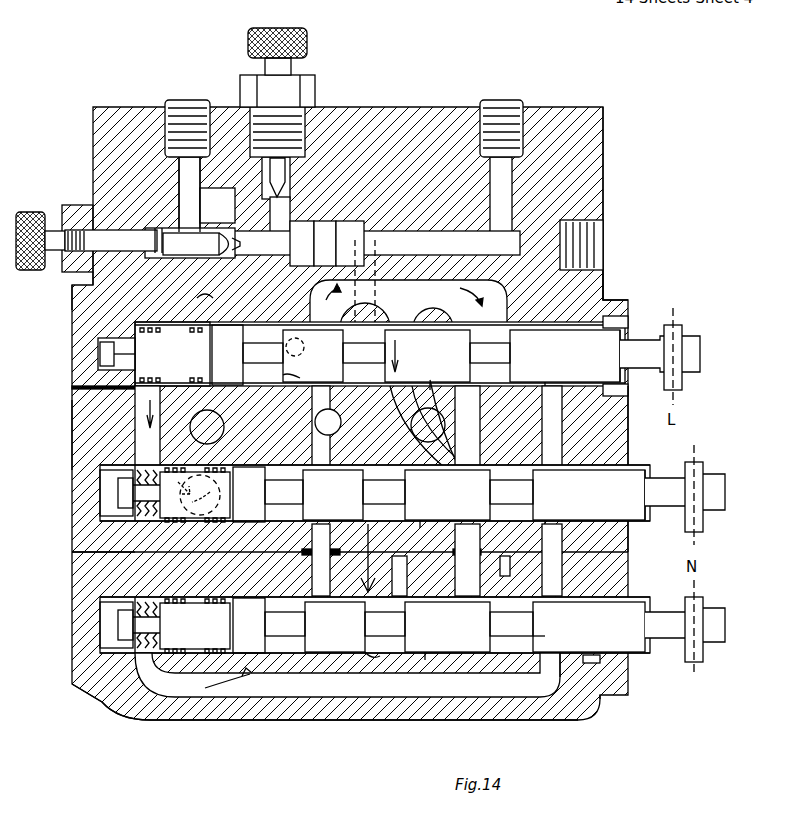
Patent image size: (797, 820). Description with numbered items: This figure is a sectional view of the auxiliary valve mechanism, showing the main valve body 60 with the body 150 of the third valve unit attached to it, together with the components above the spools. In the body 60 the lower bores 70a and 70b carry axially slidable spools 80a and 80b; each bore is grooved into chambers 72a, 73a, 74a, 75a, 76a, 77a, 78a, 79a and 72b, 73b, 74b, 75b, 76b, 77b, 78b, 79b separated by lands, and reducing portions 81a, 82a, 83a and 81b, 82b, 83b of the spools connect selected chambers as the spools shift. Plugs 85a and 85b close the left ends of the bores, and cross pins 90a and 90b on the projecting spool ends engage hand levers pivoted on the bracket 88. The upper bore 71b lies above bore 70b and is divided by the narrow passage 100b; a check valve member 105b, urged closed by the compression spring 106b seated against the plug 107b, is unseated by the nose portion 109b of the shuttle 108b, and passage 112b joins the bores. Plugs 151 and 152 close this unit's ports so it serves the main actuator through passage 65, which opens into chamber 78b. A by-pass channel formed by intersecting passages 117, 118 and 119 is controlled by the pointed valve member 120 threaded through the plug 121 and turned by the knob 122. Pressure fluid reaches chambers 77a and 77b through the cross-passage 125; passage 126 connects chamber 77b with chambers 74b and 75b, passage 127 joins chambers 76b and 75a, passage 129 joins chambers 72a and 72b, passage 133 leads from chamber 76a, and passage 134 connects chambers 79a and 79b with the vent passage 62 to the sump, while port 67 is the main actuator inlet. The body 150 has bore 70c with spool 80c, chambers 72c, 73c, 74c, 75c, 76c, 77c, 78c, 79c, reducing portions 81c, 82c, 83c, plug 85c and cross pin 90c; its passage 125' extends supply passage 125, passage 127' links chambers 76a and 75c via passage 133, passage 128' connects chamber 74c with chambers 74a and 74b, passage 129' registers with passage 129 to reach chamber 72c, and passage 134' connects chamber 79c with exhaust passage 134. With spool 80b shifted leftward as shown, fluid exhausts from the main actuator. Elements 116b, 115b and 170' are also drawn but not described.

The knob 122 is at (308, 43).
The plug 121 is at (248, 88).
The plug 151 is at (182, 112).
The passage 118 is at (232, 190).
The valve member 120 is at (305, 130).
The plug 152 is at (512, 112).
The passage 119 is at (180, 175).
The passage 117 is at (286, 175).
The nose portion 109b is at (290, 215).
The adjusting knob 116b is at (28, 212).
The compression spring 106b is at (150, 232).
The plug 107b is at (66, 270).
The flange 115b is at (72, 290).
The check valve member 105b is at (195, 255).
The passage 112b is at (250, 298).
The narrow passage 100b is at (248, 257).
The shuttle 108b is at (372, 237).
The passage 126 is at (418, 290).
The bore 71b is at (603, 235).
The plug 85b is at (100, 345).
The chamber 79b is at (165, 332).
The chamber 78b is at (270, 365).
The third passage 65 is at (300, 341).
The reducing portion 83b is at (300, 366).
The chamber 77b is at (320, 372).
The chamber 76b is at (380, 350).
The reducing portion 82b is at (412, 350).
The chamber 74b is at (487, 360).
The reducing portion 81b is at (515, 360).
The chamber 72b is at (560, 336).
The bore 70b is at (603, 297).
The bracket 88 is at (622, 318).
The valve spool 80b is at (632, 340).
The cross pin 90b is at (683, 385).
The passage 127 is at (426, 415).
The chamber 75b is at (445, 366).
The chamber 73b is at (535, 368).
The passage 134 is at (82, 400).
The valve body 60 is at (100, 440).
The chamber 79a is at (172, 470).
The plug 85a is at (100, 485).
The cross-passage 125 is at (303, 426).
The inlet port 67 is at (320, 428).
The passage 129 is at (601, 426).
The bore 70a is at (605, 445).
The chamber 78a is at (262, 482).
The vent passage 62 is at (222, 505).
The reducing portion 83a is at (285, 497).
The chamber 77a is at (325, 480).
The chamber 76a is at (350, 526).
The reducing portion 82a is at (398, 494).
The chamber 75a is at (418, 516).
The chamber 74a is at (470, 520).
The reducing portion 81a is at (518, 498).
The chamber 72a is at (565, 475).
The chamber 73a is at (540, 522).
The valve spool 80a is at (640, 515).
The cross pin 90a is at (704, 520).
The passage 134' is at (81, 565).
The passage 125' is at (296, 560).
The passage 133 is at (392, 566).
The passage 127' is at (452, 560).
The passage 128' is at (511, 570).
The passage 129' is at (603, 560).
The plug 85c is at (100, 642).
The chamber 79c is at (190, 606).
The chamber 78c is at (262, 618).
The reducing portion 83c is at (282, 630).
The chamber 76c is at (355, 600).
The chamber 77c is at (328, 652).
The reducing portion 82c is at (400, 628).
The chamber 75c is at (416, 648).
The chamber 74c is at (466, 652).
The chamber 73c is at (532, 612).
The chamber 72c is at (562, 608).
The reducing portion 81c is at (520, 640).
The valve spool 80c is at (640, 650).
The cross pin 90c is at (704, 655).
The bore 70c is at (560, 672).
The valve body 150 is at (120, 702).
The return channel 170' is at (347, 698).